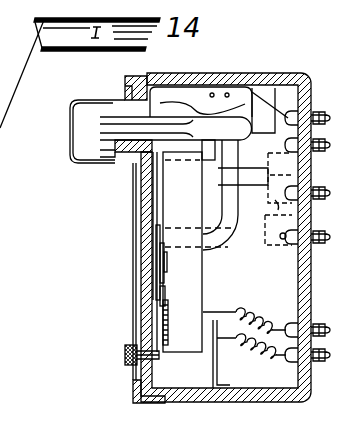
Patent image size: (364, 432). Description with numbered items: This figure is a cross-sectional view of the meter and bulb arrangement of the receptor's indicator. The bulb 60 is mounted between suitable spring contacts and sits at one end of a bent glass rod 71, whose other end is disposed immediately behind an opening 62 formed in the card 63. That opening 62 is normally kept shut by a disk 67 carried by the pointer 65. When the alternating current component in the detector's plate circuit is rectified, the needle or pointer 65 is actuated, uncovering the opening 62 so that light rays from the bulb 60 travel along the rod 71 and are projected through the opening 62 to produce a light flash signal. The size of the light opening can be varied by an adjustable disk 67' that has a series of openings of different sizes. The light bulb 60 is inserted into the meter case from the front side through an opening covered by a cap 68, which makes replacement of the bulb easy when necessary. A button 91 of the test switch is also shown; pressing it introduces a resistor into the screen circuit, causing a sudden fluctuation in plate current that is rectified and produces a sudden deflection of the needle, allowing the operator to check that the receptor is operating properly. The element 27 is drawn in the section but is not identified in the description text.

The cap 68 is at (97, 100).
The bulb 60 is at (204, 117).
The card 63 is at (141, 183).
The contact plate 27 is at (152, 232).
The disk 67 is at (129, 263).
The opening 62 is at (158, 256).
The pointer 65 is at (155, 292).
The adjustable disk 67' is at (125, 329).
The button 91 is at (126, 356).
The bent glass rod 71 is at (236, 238).